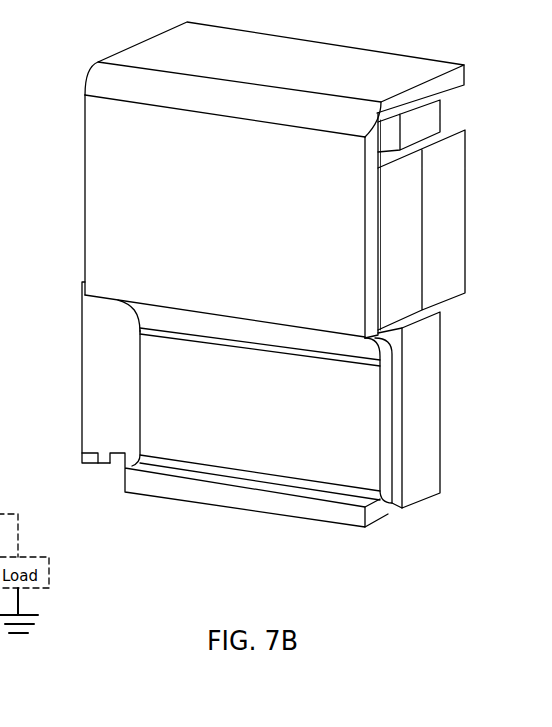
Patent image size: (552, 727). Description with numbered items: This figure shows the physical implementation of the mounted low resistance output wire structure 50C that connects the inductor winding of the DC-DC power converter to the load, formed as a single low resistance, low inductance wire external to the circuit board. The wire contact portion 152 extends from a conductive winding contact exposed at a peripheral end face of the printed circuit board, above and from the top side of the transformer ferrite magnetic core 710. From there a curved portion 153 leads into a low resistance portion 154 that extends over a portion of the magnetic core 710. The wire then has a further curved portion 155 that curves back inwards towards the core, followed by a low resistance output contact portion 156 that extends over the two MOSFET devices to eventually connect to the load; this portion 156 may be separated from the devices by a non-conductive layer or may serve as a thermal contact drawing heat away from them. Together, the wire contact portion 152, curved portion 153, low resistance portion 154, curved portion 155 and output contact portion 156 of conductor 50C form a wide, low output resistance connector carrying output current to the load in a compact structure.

The wire contact portion 152 is at (153, 52).
The curved portion 153 is at (100, 82).
The low resistance portion 154 is at (100, 181).
The curved portion 155 is at (138, 313).
The low resistance output contact portion 156 is at (355, 448).
The integrated magnetic ferrite core 710 is at (452, 205).
The connector assembly 50C is at (84, 229).